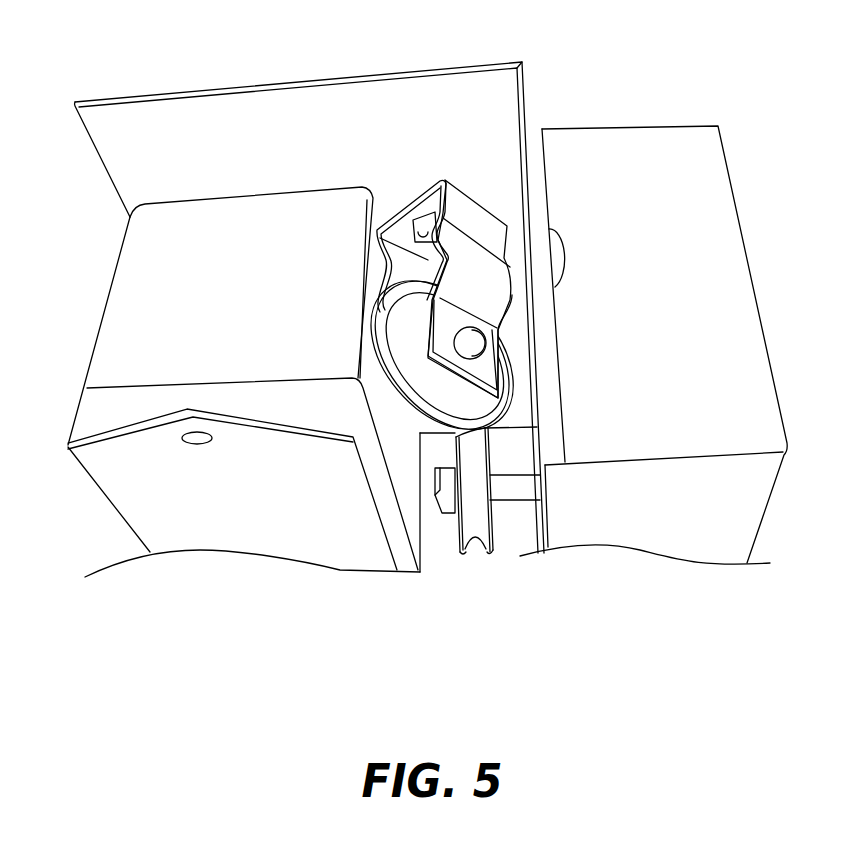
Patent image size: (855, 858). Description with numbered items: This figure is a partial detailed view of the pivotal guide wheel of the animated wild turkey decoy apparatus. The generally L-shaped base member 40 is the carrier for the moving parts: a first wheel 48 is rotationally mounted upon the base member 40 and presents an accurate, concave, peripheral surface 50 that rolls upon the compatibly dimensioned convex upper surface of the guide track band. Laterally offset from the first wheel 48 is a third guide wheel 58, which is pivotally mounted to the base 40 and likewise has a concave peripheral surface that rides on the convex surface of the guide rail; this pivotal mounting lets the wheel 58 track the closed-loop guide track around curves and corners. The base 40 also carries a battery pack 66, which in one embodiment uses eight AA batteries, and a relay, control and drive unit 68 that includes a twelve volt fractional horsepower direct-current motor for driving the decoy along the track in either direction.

The base member 40 is at (487, 62).
The first wheel 48 is at (488, 548).
The concave peripheral surface 50 is at (465, 549).
The third guide wheel 58 is at (506, 370).
The battery pack 66 is at (748, 268).
The relay, control and drive unit 68 is at (96, 345).